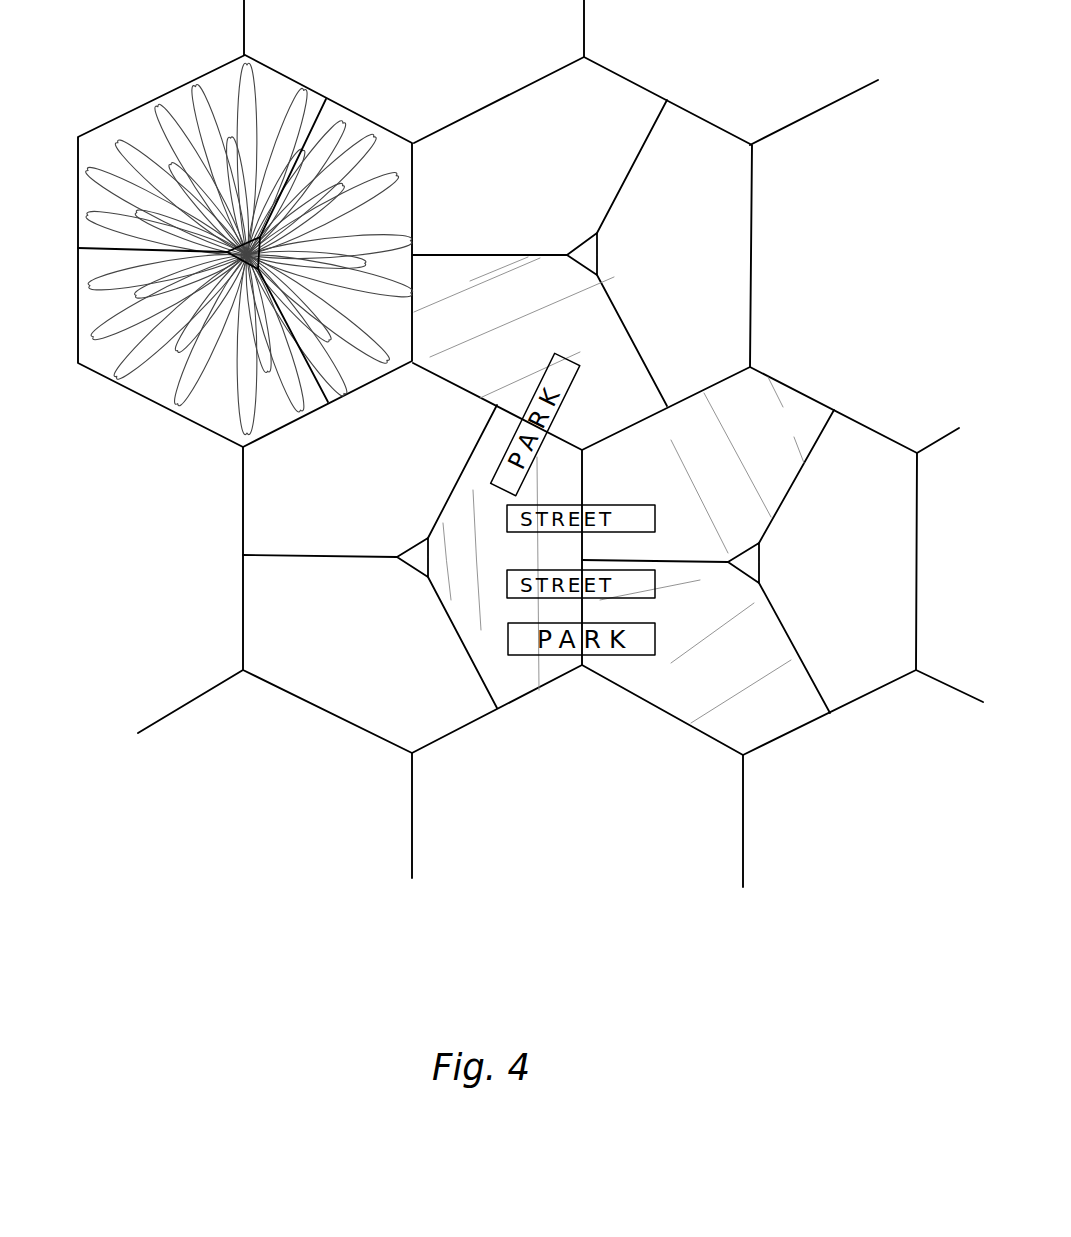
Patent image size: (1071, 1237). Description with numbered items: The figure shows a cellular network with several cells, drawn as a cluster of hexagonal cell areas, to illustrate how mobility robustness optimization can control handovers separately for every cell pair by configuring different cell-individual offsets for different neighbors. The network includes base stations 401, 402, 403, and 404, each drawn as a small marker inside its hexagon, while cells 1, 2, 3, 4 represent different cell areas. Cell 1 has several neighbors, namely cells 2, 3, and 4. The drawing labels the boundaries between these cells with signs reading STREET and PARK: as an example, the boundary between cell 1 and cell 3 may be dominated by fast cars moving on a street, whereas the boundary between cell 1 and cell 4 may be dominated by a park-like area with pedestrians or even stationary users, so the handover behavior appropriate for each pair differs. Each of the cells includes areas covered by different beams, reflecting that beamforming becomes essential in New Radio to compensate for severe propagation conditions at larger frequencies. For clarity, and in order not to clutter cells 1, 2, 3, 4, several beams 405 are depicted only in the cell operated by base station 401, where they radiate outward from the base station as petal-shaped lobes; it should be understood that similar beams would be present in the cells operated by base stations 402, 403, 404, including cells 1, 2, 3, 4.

The base station 401 is at (230, 237).
The base station 402 is at (572, 248).
The base station 403 is at (412, 542).
The base station 404 is at (761, 562).
The beams 405 is at (262, 78).
The cell 1 is at (462, 618).
The cell 2 is at (715, 652).
The cell 3 is at (752, 465).
The cell 4 is at (514, 327).